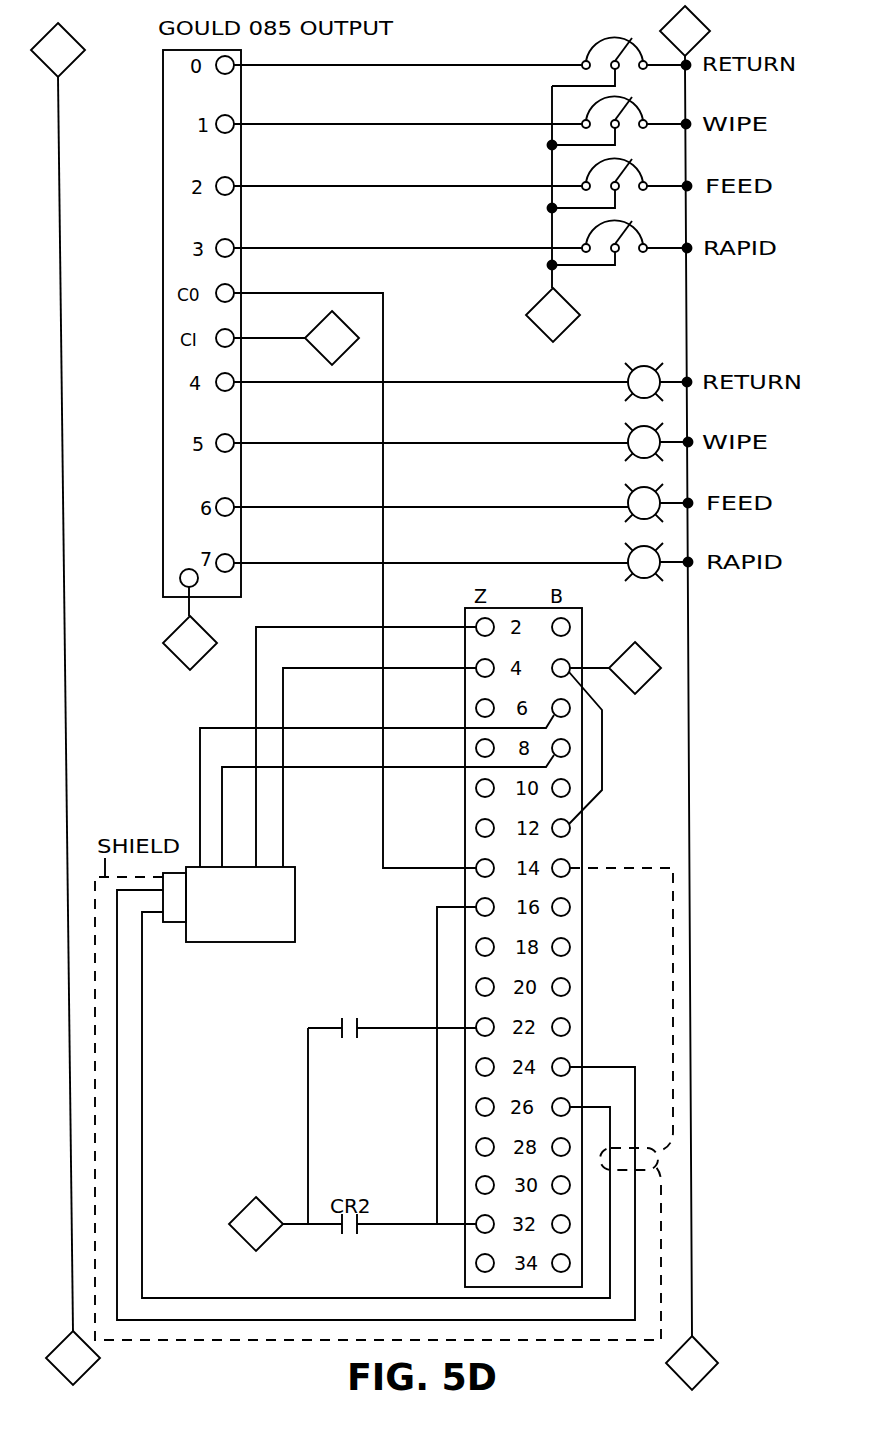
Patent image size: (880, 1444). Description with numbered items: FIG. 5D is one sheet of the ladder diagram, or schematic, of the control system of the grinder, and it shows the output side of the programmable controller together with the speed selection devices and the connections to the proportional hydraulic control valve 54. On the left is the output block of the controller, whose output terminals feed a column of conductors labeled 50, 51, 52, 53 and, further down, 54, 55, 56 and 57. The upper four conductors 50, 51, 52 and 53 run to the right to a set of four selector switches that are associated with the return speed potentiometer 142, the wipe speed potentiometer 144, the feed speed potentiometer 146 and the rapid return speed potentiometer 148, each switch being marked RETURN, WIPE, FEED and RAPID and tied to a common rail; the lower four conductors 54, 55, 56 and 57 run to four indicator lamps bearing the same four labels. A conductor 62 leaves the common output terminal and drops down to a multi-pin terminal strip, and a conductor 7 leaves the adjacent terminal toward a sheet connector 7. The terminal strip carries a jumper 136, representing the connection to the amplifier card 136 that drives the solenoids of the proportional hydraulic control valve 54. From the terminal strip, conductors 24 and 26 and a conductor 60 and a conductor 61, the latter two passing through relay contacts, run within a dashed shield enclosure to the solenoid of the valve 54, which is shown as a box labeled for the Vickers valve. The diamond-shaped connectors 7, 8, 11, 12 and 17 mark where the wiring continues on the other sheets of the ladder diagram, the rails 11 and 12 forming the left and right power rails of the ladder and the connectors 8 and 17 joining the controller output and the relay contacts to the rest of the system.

The gauge 50 is at (408, 55).
The output line 51 is at (408, 111).
The relief valve 52 is at (408, 173).
The output line 53 is at (408, 235).
The hydraulic control valve 54 is at (250, 978).
The output line 55 is at (431, 430).
The reservoir 56 is at (431, 494).
The output line 57 is at (431, 550).
The hydraulic line 60 is at (440, 1053).
The conductor 61 is at (392, 1111).
The return line 62 is at (355, 568).
The return speed potentiometer 142 is at (583, 55).
The wipe speed potentiometer 144 is at (676, 98).
The feed speed potentiometer 146 is at (668, 160).
The rapid return speed potentiometer 148 is at (668, 222).
The amplifier card 136 is at (625, 773).
The conductor 24 is at (376, 1105).
The conductor 26 is at (379, 1105).
The sheet connector 7 is at (296, 338).
The sheet connector 8 is at (412, 655).
The sheet connector 11 is at (689, 698).
The sheet connector 12 is at (65, 704).
The sheet connector 17 is at (404, 668).